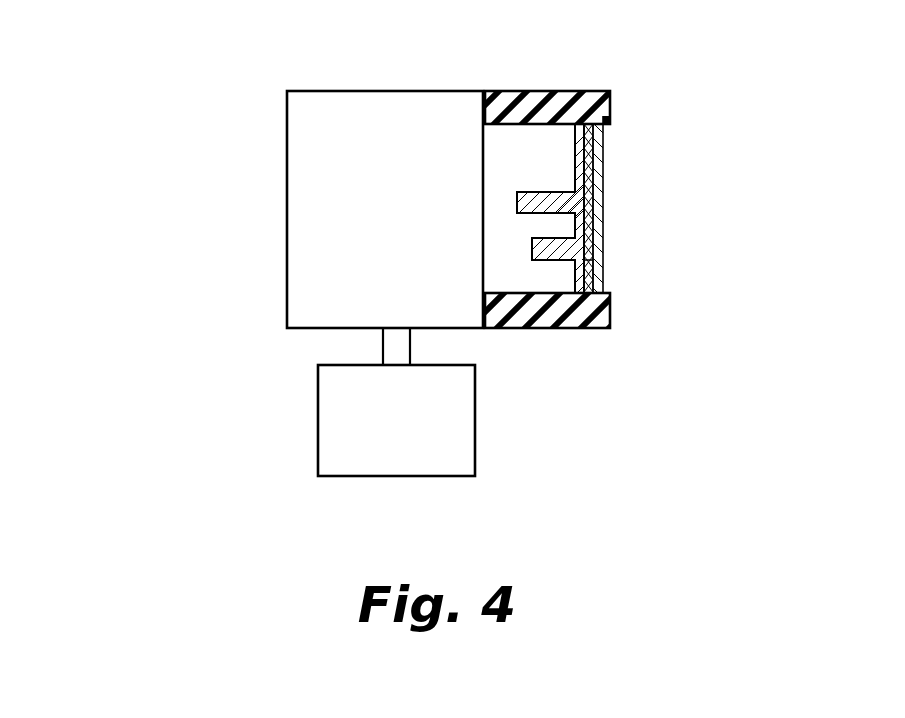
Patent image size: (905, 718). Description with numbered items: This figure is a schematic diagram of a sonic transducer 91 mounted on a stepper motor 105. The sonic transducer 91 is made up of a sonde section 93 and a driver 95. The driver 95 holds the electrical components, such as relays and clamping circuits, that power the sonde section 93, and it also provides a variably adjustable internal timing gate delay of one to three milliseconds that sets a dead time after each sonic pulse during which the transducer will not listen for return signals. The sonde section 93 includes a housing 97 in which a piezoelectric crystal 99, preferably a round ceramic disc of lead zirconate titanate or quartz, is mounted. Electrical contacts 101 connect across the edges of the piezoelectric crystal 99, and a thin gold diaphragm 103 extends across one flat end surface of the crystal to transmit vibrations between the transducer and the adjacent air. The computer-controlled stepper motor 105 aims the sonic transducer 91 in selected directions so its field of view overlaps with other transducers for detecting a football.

The sonic transducer 91 is at (180, 197).
The sonde section 93 is at (547, 200).
The driver 95 is at (345, 252).
The housing 97 is at (543, 102).
The piezoelectric crystal 99 is at (605, 288).
The electrical contacts 101 is at (612, 126).
The diaphragm 103 is at (605, 197).
The stepper motor 105 is at (345, 427).